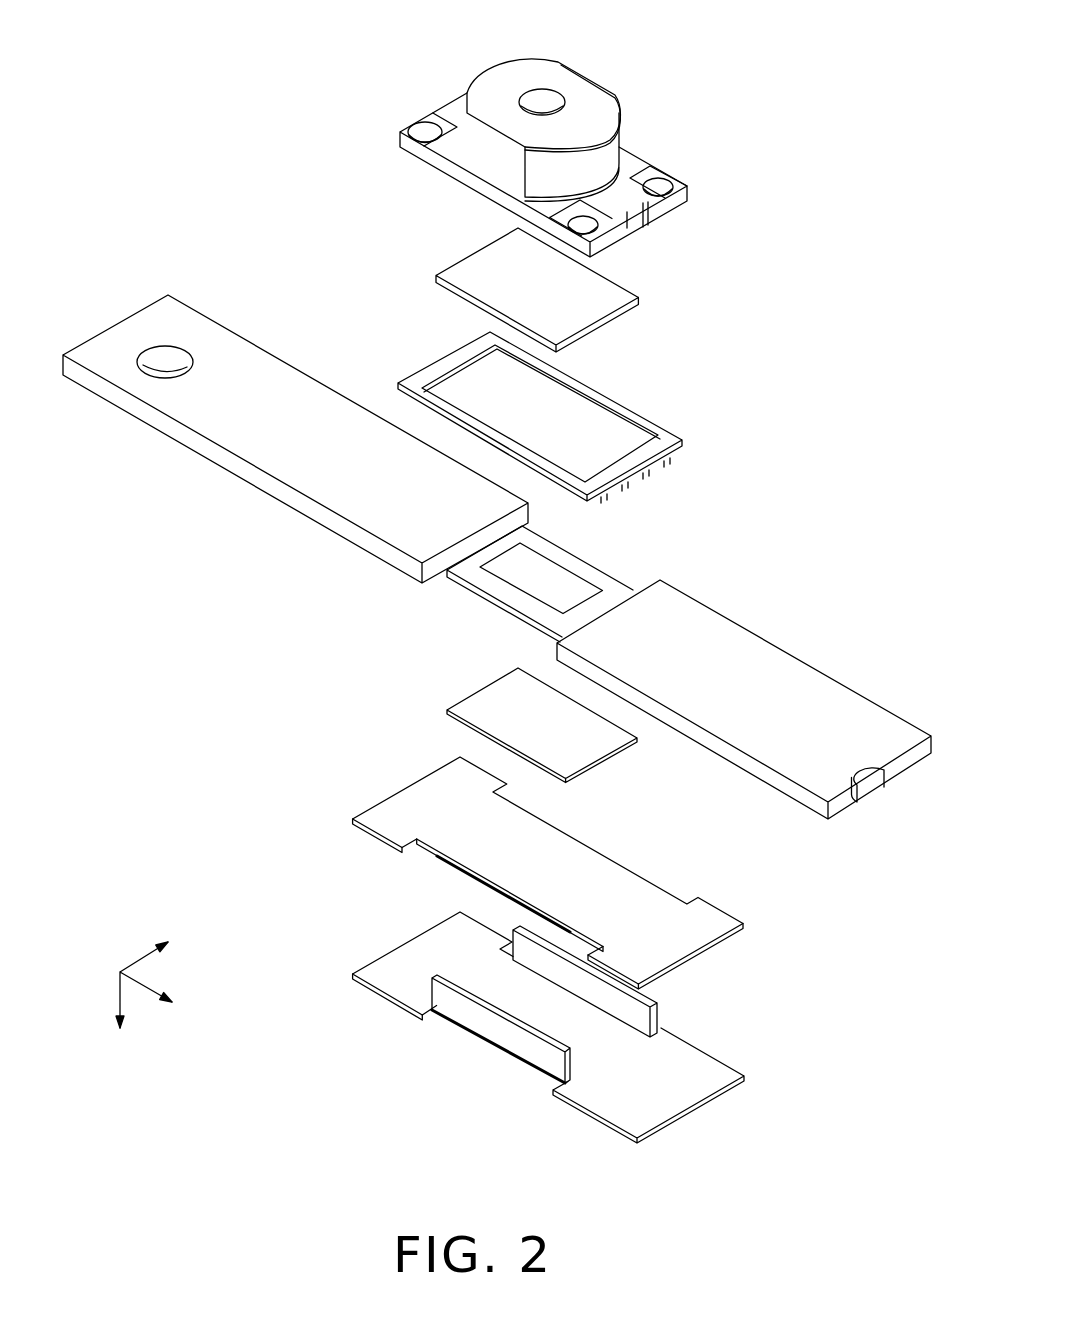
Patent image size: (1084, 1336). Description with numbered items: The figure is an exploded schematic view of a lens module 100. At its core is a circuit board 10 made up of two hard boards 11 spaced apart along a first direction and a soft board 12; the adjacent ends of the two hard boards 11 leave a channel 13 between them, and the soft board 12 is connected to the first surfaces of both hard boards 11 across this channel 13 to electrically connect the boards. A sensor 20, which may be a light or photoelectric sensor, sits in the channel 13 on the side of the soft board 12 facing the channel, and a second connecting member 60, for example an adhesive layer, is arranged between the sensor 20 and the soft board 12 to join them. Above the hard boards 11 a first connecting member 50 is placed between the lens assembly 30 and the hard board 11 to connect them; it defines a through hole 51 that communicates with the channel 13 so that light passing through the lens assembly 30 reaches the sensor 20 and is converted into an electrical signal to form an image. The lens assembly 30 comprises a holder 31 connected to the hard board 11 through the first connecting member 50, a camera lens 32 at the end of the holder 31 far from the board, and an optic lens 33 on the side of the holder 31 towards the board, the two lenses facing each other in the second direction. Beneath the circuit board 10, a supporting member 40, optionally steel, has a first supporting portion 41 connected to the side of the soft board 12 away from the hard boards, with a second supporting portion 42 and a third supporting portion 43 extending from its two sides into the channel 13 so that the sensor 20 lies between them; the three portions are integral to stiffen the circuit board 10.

The lens module 100 is at (397, 21).
The circuit board 10 is at (350, 645).
The hard board 11 is at (414, 533).
The soft board 12 is at (433, 793).
The channel 13 is at (585, 537).
The sensor 20 is at (577, 590).
The lens assembly 30 is at (353, 185).
The holder 31 is at (502, 160).
The camera lens 32 is at (537, 108).
The optic lens 33 is at (482, 277).
The supporting member 40 is at (465, 1152).
The first supporting portion 41 is at (600, 1090).
The second supporting portion 42 is at (550, 962).
The third supporting portion 43 is at (513, 1042).
The first connecting member 50 is at (670, 440).
The through hole 51 is at (573, 407).
The second connecting member 60 is at (593, 745).